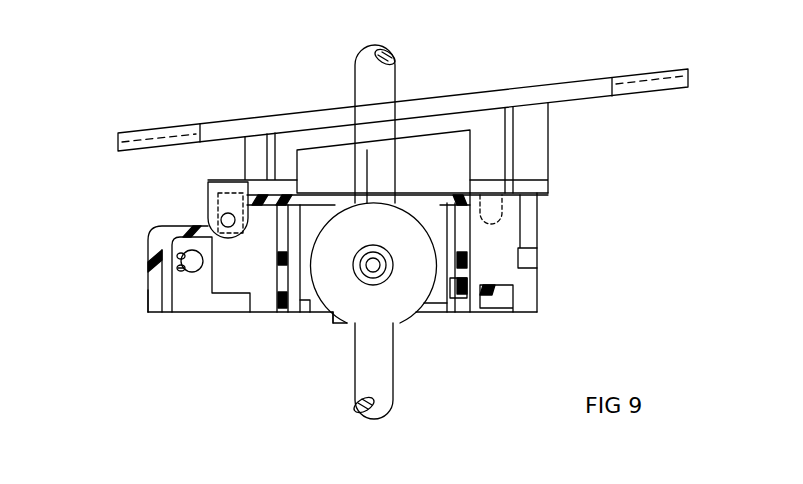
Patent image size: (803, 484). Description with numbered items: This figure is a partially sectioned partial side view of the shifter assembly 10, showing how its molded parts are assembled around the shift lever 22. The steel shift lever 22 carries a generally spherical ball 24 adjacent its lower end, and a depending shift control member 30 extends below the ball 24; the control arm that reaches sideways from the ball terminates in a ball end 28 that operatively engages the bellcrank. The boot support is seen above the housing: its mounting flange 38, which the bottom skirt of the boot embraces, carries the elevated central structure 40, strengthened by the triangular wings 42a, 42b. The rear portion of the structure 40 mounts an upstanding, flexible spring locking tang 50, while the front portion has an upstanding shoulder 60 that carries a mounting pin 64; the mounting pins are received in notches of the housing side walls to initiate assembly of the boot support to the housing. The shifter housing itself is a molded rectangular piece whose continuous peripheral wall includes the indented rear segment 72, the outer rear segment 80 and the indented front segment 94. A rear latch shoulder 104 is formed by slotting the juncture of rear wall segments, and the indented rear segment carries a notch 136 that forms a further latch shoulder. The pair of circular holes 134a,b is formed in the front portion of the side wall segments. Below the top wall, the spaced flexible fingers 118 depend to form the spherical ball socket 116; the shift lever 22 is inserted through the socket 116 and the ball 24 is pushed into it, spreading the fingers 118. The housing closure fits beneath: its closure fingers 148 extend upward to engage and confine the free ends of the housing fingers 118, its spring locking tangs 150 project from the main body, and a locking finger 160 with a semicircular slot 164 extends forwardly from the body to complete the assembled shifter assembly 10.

The shifter assembly 10 is at (612, 166).
The shift lever 22 is at (388, 80).
The ball 24 is at (373, 218).
The ball end 28 is at (373, 272).
The shift control member 30 is at (390, 405).
The mounting flange 38 is at (575, 88).
The elevated central structure 40 is at (487, 123).
The triangular wing 42a is at (268, 157).
The triangular wing 42b is at (513, 130).
The spring locking tang 50 is at (540, 203).
The shoulder 60 is at (228, 243).
The mounting pin 64 is at (222, 217).
The indented rear segment 72 is at (485, 228).
The outer rear segment 80 is at (540, 300).
The indented front segment 94 is at (280, 235).
The rear latch shoulder 104 is at (520, 257).
The ball socket 116 is at (330, 323).
The flexible fingers 118 is at (308, 300).
The circular holes 134a,b is at (181, 255).
The notch 136 is at (480, 290).
The closure fingers 148 is at (273, 285).
The spring locking tangs 150 is at (470, 280).
The locking finger 160 is at (198, 302).
The semicircular slot 164 is at (178, 268).